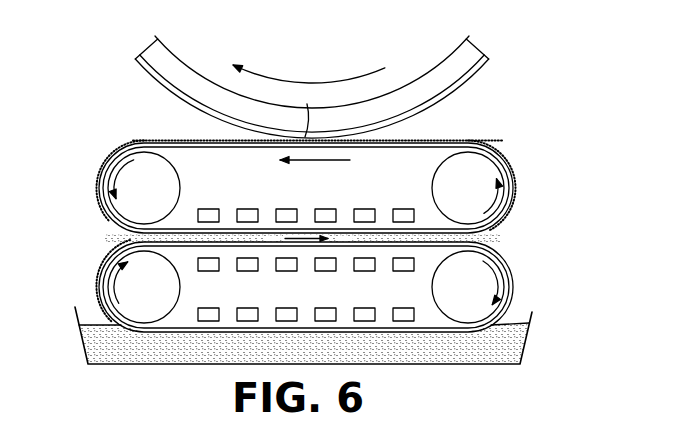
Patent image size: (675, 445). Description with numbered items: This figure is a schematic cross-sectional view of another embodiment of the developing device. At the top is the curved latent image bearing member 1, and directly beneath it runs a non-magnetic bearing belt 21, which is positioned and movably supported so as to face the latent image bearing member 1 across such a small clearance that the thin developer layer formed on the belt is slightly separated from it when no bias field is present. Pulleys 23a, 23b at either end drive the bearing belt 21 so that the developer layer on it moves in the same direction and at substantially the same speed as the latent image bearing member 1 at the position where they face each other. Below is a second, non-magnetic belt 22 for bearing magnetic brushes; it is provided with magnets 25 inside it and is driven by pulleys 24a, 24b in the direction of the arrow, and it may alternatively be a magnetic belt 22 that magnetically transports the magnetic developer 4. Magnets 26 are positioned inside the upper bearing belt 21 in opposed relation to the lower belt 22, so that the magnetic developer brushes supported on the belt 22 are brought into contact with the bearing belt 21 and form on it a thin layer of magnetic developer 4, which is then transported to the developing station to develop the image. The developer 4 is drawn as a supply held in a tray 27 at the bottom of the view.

The latent image bearing member 1 is at (477, 67).
The non-magnetic bearing belt 21 is at (436, 146).
The non-magnetic belt for bearing magnetic brushes 22 is at (478, 246).
The pulley 23a is at (488, 165).
The pulley 23b is at (137, 163).
The pulley 24a is at (500, 283).
The pulley 24b is at (107, 277).
The magnets 25 is at (322, 308).
The magnets 26 is at (362, 208).
The tank 27 is at (528, 341).
The magnetic developer 4 is at (457, 352).